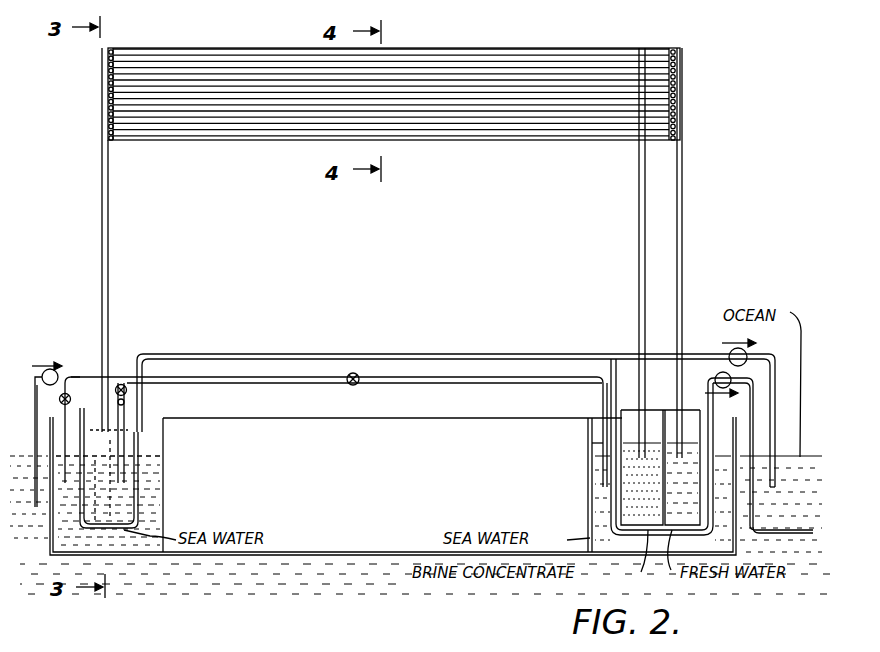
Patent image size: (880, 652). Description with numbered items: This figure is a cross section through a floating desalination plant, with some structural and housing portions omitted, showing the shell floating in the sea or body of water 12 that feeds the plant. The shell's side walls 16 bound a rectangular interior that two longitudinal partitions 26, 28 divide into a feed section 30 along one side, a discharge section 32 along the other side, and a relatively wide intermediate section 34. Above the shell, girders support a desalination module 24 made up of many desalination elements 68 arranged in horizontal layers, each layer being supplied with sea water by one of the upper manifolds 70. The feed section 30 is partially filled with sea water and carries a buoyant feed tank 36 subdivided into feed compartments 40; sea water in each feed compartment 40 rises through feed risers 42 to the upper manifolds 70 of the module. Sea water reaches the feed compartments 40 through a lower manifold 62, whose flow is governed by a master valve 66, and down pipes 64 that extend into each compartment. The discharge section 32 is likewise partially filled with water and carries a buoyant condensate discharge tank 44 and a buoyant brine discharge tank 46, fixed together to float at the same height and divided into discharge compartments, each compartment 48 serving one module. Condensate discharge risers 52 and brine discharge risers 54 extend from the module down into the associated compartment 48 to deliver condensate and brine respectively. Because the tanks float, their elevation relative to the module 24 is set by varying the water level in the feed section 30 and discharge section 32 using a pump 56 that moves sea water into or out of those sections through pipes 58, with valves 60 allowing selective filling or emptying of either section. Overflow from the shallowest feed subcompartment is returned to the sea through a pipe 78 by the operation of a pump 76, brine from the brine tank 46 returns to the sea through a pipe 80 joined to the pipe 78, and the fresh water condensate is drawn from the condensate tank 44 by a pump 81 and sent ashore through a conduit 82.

The sea or body of water 12 is at (356, 588).
The side walls 16 is at (52, 436).
The desalination modules 24 is at (241, 48).
The longitudinal partition 26 is at (164, 516).
The longitudinal partition 28 is at (603, 468).
The feed section 30 is at (160, 452).
The discharge section 32 is at (590, 443).
The intermediate section 34 is at (392, 485).
The feed tank 36 is at (118, 528).
The feed compartments 40 is at (97, 413).
The feed risers 42 is at (109, 226).
The condensate discharge tank 44 is at (688, 528).
The brine discharge tank 46 is at (640, 528).
The discharge compartment 48 is at (652, 416).
The condensate discharge risers 52 is at (683, 214).
The brine discharge risers 54 is at (638, 234).
The pump 56 is at (42, 377).
The pipes 58 is at (92, 352).
The valves 60 is at (58, 399).
The lower manifold 62 is at (126, 406).
The down pipes 64 is at (136, 436).
The master valve 66 is at (128, 391).
The desalination elements 68 is at (512, 50).
The upper manifolds 70 is at (112, 50).
The pump 76 is at (752, 352).
The pipe 78 is at (224, 354).
The pipe 80 is at (598, 508).
The pump 81 is at (716, 378).
The conduit 82 is at (752, 431).